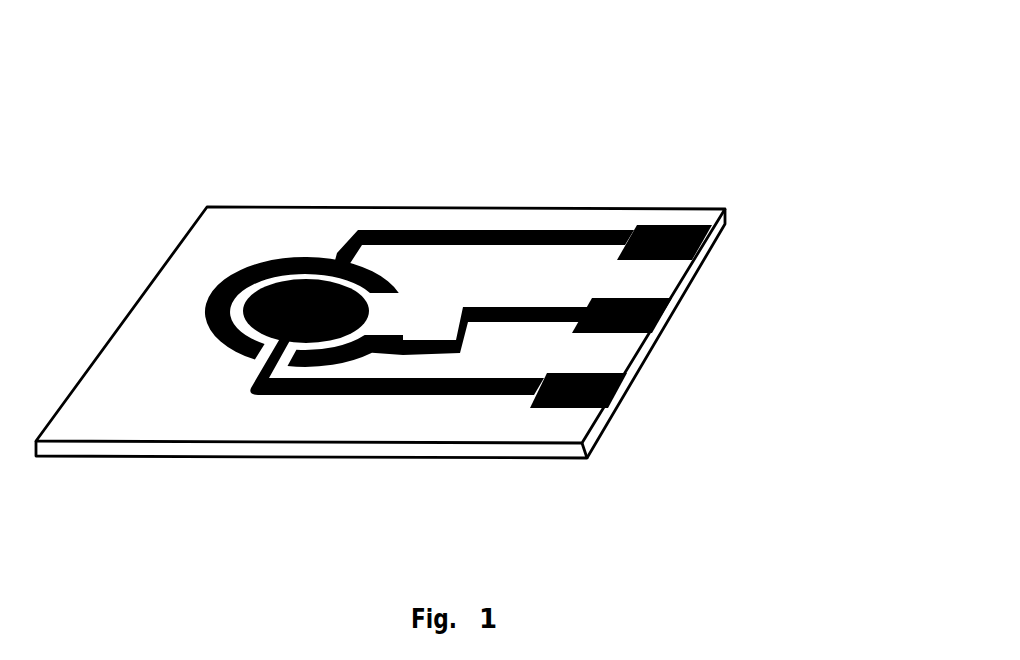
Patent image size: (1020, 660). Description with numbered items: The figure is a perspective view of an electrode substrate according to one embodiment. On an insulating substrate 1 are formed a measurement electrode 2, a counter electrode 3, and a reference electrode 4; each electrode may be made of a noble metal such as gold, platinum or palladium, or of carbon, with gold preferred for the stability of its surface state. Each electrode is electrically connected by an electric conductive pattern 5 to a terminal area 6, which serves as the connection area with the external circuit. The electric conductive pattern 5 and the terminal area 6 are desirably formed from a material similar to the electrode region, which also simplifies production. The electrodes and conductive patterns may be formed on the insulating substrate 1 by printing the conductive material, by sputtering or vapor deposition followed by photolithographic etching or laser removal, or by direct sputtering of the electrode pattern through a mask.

The insulating substrate 1 is at (523, 422).
The measurement electrode 2 is at (325, 283).
The counter electrode 3 is at (270, 259).
The reference electrode 4 is at (323, 366).
The electric conductive pattern 5 is at (560, 232).
The terminal area 6 is at (722, 212).